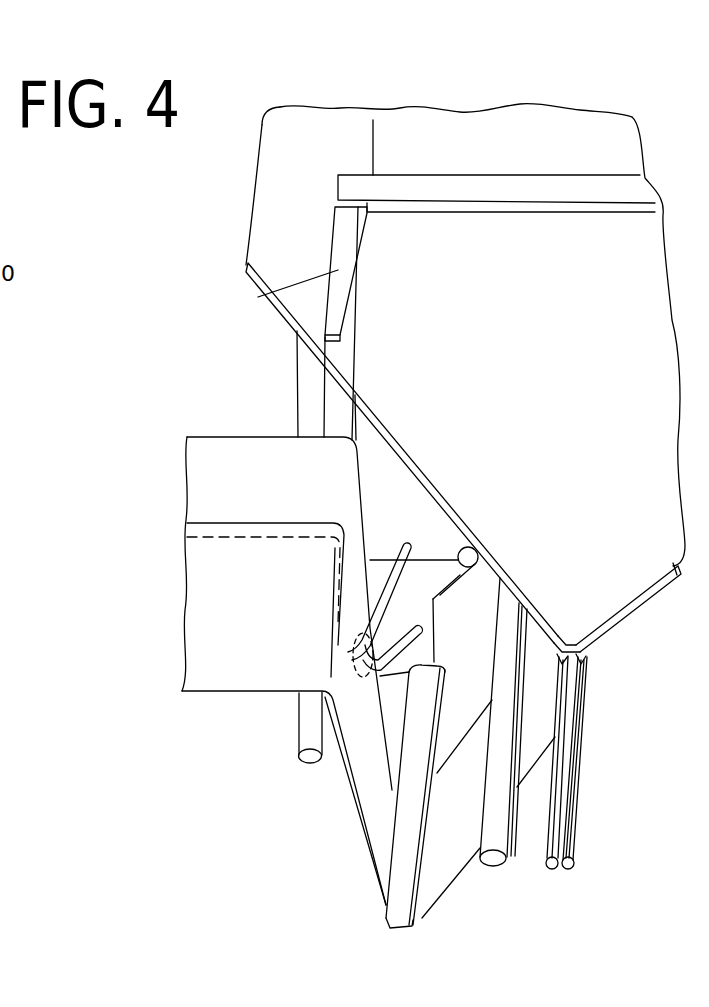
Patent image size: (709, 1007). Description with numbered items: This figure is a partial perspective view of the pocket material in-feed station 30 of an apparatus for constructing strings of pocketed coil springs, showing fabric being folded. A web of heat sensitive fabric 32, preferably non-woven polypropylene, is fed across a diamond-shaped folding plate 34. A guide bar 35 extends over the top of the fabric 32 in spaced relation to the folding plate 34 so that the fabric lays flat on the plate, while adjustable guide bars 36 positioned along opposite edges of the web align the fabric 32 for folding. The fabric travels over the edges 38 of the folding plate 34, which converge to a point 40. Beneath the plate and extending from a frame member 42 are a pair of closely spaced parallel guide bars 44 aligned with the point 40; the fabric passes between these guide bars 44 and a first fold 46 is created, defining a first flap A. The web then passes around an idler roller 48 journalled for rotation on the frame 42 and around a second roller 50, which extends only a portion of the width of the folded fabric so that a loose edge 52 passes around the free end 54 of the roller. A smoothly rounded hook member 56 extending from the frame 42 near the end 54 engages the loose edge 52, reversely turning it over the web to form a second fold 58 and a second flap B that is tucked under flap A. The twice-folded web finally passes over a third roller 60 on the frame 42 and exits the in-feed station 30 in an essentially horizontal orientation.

The pocket material in-feed station 30 is at (194, 230).
The web of heat sensitive fabric 32 is at (541, 129).
The diamond-shaped folding plate 34 is at (281, 161).
The guide bar 35 is at (415, 180).
The adjustable guide bars 36 is at (262, 297).
The edges of the folding plate 38 is at (281, 313).
The point of the folding plate 40 is at (582, 652).
The frame member 42 is at (375, 496).
The guide bars 44 is at (553, 869).
The first fold 46 is at (525, 788).
The idler roller 48 is at (493, 862).
The second roller 50 is at (388, 912).
The loose edge of fabric 52 is at (460, 563).
The free end of the second roller 54 is at (428, 690).
The smoothly rounded hook member 56 is at (403, 572).
The second fold 58 is at (372, 546).
The third roller 60 is at (307, 757).